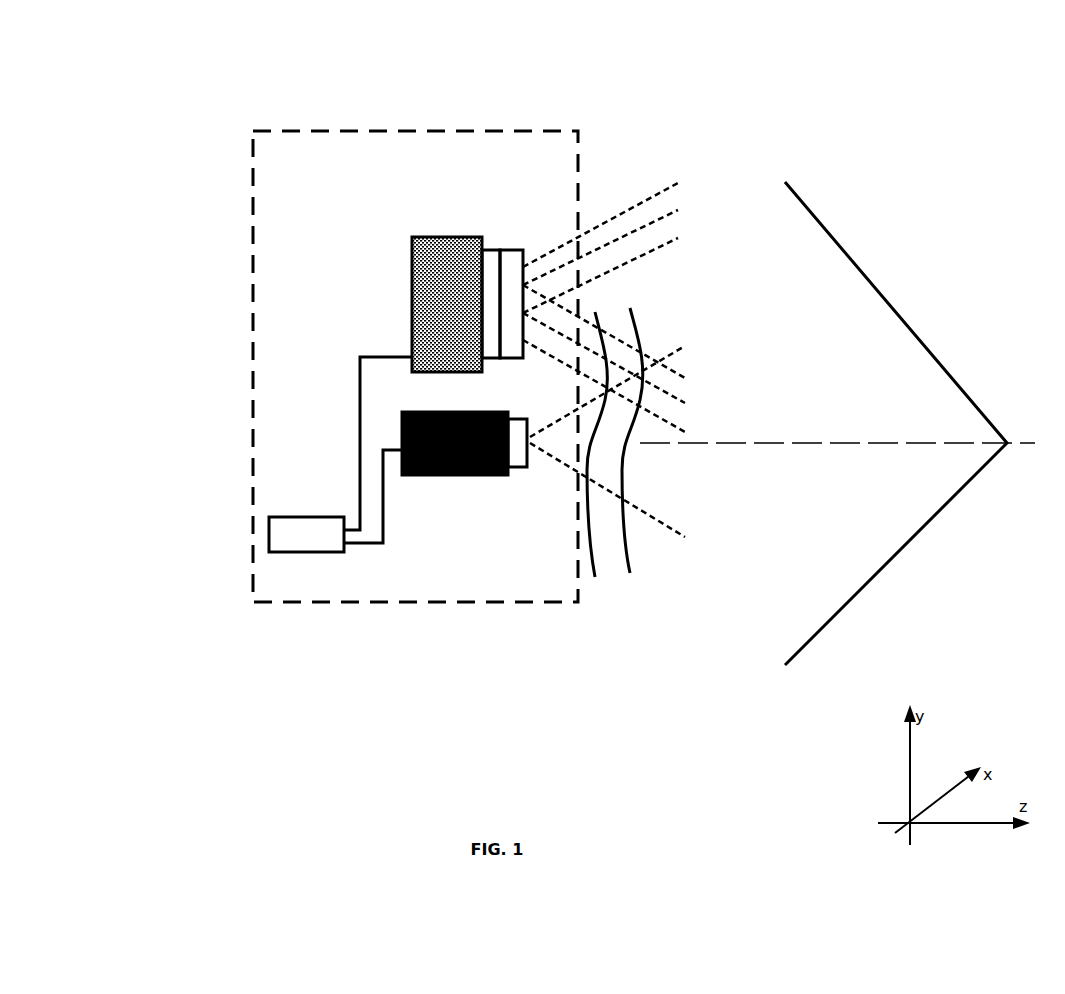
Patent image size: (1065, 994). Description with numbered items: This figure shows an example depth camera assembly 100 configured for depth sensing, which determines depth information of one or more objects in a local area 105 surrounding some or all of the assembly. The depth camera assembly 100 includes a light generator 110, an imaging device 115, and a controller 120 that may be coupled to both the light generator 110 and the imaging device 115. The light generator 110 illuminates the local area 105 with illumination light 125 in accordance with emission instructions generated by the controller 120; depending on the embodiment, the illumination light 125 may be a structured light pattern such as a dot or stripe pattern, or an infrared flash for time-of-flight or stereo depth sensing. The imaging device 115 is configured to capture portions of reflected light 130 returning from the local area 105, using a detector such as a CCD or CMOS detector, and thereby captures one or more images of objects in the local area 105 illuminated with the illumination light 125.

The depth camera assembly 100 is at (283, 131).
The local area 105 is at (863, 267).
The light generator 110 is at (447, 237).
The imaging device 115 is at (458, 475).
The controller 120 is at (290, 552).
The illumination light 125 is at (635, 225).
The reflected light 130 is at (612, 490).